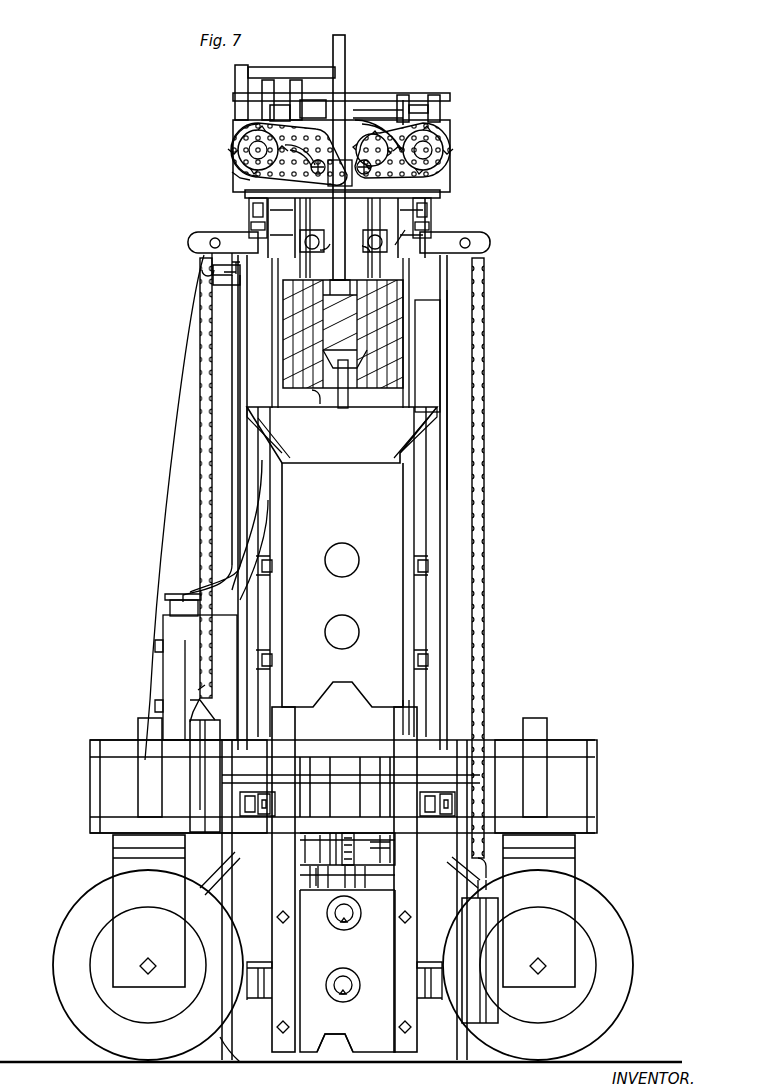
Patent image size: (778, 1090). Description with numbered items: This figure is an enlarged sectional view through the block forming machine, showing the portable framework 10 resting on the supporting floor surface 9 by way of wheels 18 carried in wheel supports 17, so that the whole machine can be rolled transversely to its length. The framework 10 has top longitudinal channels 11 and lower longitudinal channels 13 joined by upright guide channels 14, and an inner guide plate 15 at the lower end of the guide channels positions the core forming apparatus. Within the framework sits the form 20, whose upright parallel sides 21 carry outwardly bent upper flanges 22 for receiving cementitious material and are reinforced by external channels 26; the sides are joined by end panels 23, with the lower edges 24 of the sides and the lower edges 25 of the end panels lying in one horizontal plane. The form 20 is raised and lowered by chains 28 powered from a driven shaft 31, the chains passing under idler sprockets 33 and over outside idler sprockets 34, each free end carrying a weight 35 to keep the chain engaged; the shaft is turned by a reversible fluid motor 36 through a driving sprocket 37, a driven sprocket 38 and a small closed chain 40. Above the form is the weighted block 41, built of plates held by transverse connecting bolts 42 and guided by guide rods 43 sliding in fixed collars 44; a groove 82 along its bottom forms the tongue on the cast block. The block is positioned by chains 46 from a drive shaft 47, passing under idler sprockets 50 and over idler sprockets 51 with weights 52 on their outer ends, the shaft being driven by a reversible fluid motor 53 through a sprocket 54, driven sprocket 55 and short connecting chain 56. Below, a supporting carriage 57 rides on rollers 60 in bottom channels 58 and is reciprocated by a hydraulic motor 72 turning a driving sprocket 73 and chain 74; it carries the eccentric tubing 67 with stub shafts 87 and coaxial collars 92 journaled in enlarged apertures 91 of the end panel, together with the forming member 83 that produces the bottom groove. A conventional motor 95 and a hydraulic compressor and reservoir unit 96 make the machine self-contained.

The supporting floor surface 9 is at (242, 1058).
The framework 10 is at (449, 300).
The top longitudinal channels 11 is at (252, 208).
The lower longitudinal channels 13 is at (255, 820).
The upright guide channels 14 is at (346, 229).
The inner guide plate 15 is at (335, 955).
The wheel supports 17 is at (107, 865).
The wheels 18 is at (157, 1043).
The form 20 is at (313, 708).
The sides 21 is at (283, 508).
The upper flange 22 is at (262, 455).
The end panels 23 is at (349, 503).
The lower edges of the sides 24 is at (344, 879).
The lower edges of the end panels 25 is at (386, 714).
The external channels 26 is at (300, 612).
The chains 28 is at (200, 352).
The driven shaft 31 is at (312, 198).
The idler sprockets 33 is at (305, 241).
The outside idler sprockets 34 is at (192, 246).
The weight 35 is at (194, 730).
The reversible fluid motor 36 is at (240, 136).
The driving sprocket 37 is at (238, 152).
The driven sprocket 38 is at (286, 198).
The small closed chain 40 is at (232, 176).
The weighted block 41 is at (290, 340).
The transverse connecting bolts 42 is at (410, 277).
The guide rods 43 is at (348, 50).
The fixed collars 44 is at (328, 165).
The chains 46 is at (486, 292).
The drive shaft 47 is at (366, 198).
The idler sprockets 50 is at (395, 238).
The idler sprockets 51 is at (482, 236).
The weights 52 is at (481, 959).
The reversible fluid motor 53 is at (443, 137).
The sprocket 54 is at (450, 157).
The driven sprocket 55 is at (366, 140).
The short connecting chain 56 is at (440, 125).
The supporting carriage 57 is at (316, 872).
The bottom channels 58 is at (262, 1000).
The rollers 60 is at (264, 960).
The eccentric tubing 67 is at (355, 906).
The hydraulic motor 72 is at (385, 848).
The driving sprocket 73 is at (352, 832).
The chain 74 is at (336, 832).
The groove 82 is at (310, 399).
The forming member 83 is at (340, 1050).
The stub shaft 87 is at (347, 922).
The enlarged apertures 91 is at (352, 570).
The coaxial collars 92 is at (333, 918).
The motor 95 is at (427, 356).
The hydraulic compressor and reservoir unit 96 is at (190, 651).